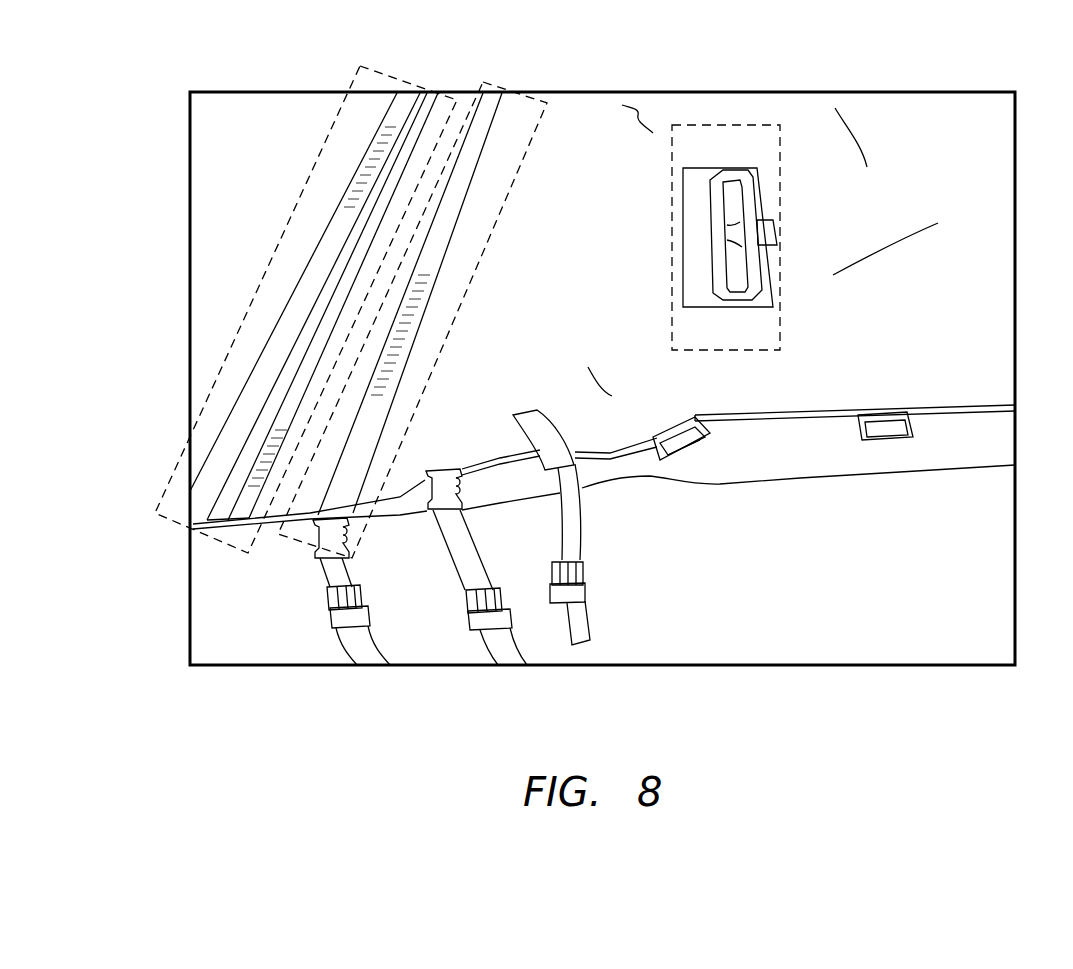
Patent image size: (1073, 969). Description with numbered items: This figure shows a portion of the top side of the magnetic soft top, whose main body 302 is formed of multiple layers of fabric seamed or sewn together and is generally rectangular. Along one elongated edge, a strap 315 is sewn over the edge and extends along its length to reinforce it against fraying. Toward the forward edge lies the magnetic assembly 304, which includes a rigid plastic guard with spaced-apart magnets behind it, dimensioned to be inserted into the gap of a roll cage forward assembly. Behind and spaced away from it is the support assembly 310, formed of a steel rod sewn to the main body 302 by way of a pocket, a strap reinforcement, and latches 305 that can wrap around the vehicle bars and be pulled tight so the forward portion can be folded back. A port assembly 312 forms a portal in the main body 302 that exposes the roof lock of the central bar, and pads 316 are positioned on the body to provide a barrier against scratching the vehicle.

The main body 302 is at (979, 161).
The magnetic assembly 304 is at (313, 165).
The latch 305 is at (445, 460).
The support assembly 310 is at (490, 252).
The port assembly 312 is at (665, 200).
The strap 315 is at (823, 403).
The pad 316 is at (490, 103).